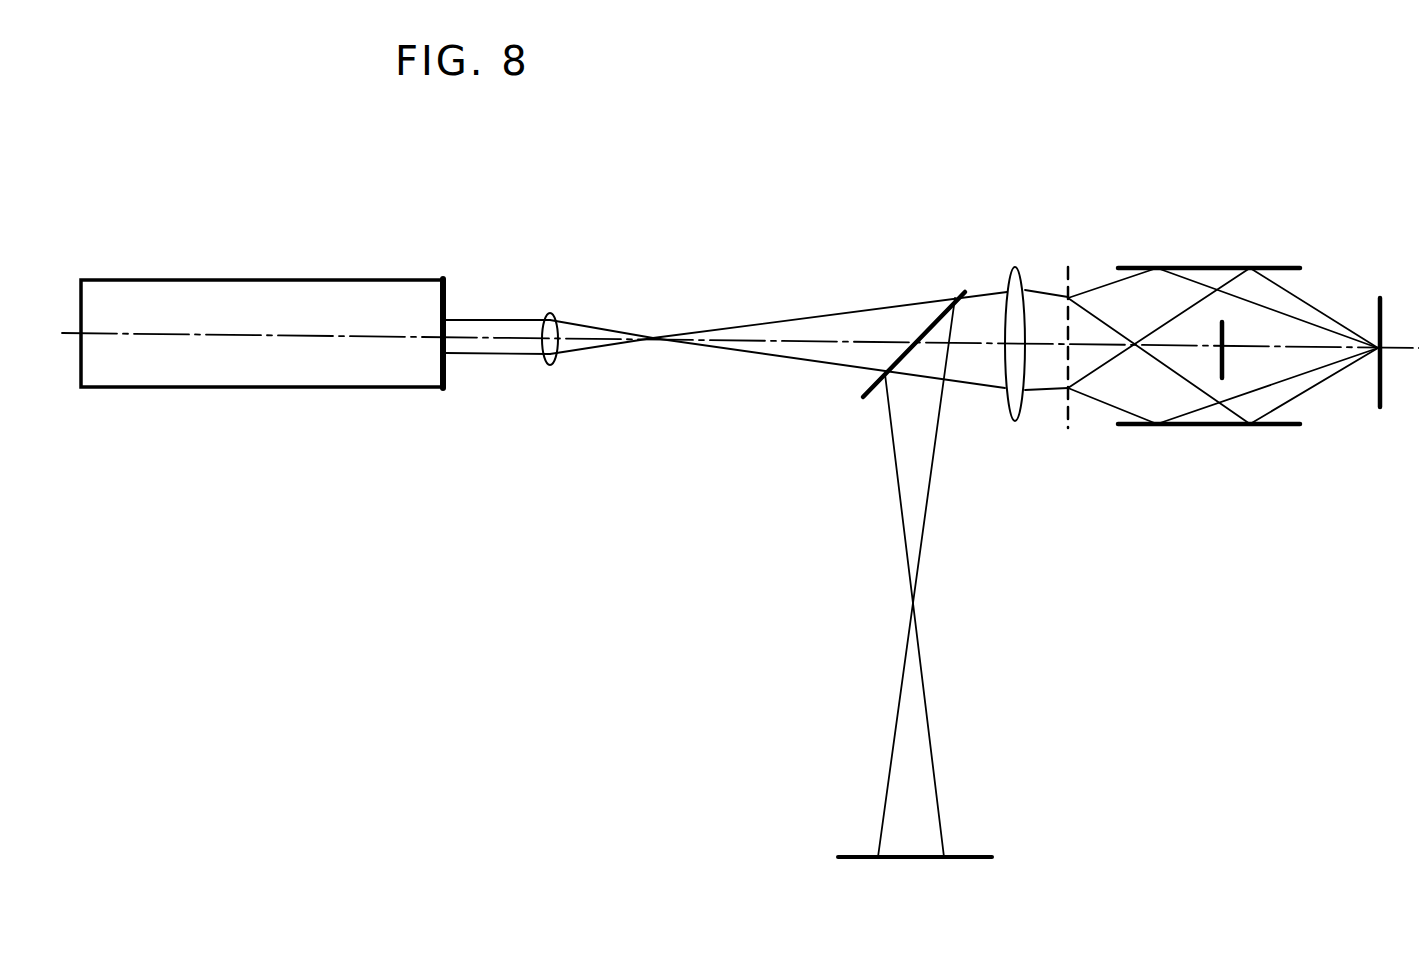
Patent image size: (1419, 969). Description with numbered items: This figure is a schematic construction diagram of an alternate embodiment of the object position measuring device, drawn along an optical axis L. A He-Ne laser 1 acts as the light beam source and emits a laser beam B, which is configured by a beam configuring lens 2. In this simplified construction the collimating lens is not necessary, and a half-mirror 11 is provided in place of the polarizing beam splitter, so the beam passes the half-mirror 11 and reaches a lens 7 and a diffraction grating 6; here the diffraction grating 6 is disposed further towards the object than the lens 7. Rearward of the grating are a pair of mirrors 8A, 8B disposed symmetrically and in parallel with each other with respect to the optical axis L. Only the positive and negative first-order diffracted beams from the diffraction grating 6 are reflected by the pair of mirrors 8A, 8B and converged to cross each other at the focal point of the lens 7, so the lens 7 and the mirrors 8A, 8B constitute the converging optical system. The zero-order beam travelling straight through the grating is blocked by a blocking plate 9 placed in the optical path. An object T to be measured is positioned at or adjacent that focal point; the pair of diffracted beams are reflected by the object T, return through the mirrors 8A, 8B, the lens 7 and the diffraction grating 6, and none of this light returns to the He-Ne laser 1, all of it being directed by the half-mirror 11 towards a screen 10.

The He-Ne laser 1 is at (358, 288).
The beam configuring lens 2 is at (550, 313).
The laser beam B is at (497, 356).
The optical axis L is at (755, 338).
The half-mirror 11 is at (935, 323).
The lens 7 is at (1018, 282).
The diffraction grating 6 is at (1073, 273).
The mirror 8A is at (1203, 266).
The mirror 8B is at (1188, 427).
The blocking plate 9 is at (1227, 333).
The object T is at (1385, 400).
The screen 10 is at (980, 855).